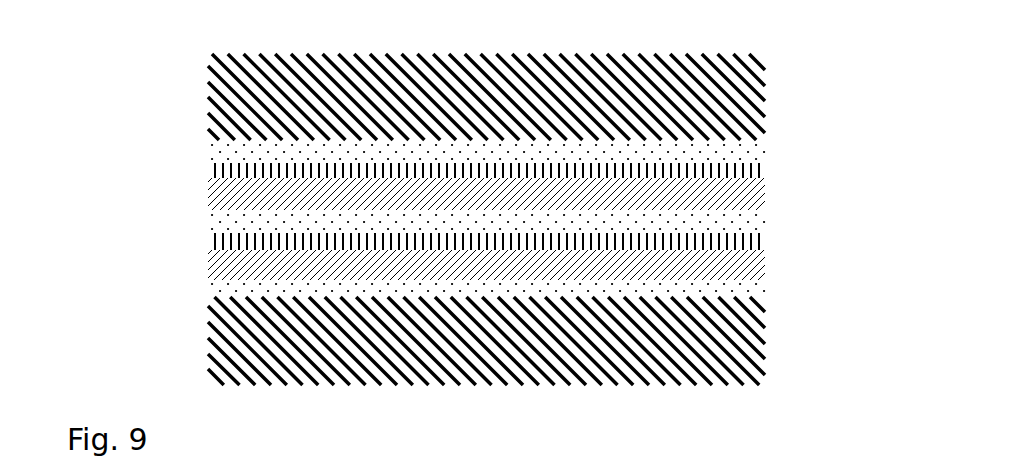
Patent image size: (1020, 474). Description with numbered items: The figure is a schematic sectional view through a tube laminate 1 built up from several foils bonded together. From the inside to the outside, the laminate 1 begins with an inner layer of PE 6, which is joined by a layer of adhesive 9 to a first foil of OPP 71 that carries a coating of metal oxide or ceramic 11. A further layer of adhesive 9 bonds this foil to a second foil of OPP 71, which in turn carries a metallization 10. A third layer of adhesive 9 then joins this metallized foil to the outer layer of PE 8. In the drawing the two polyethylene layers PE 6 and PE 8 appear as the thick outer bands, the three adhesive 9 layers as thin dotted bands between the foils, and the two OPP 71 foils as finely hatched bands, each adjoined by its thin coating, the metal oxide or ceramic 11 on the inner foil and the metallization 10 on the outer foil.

The layered composite / laminate 1 is at (176, 102).
The PE 6 is at (712, 342).
The PE 8 is at (707, 88).
The adhesive 9 is at (730, 145).
The metallization 10 is at (225, 172).
The metal oxide or ceramic 11 is at (243, 238).
The OPP 71 is at (743, 188).